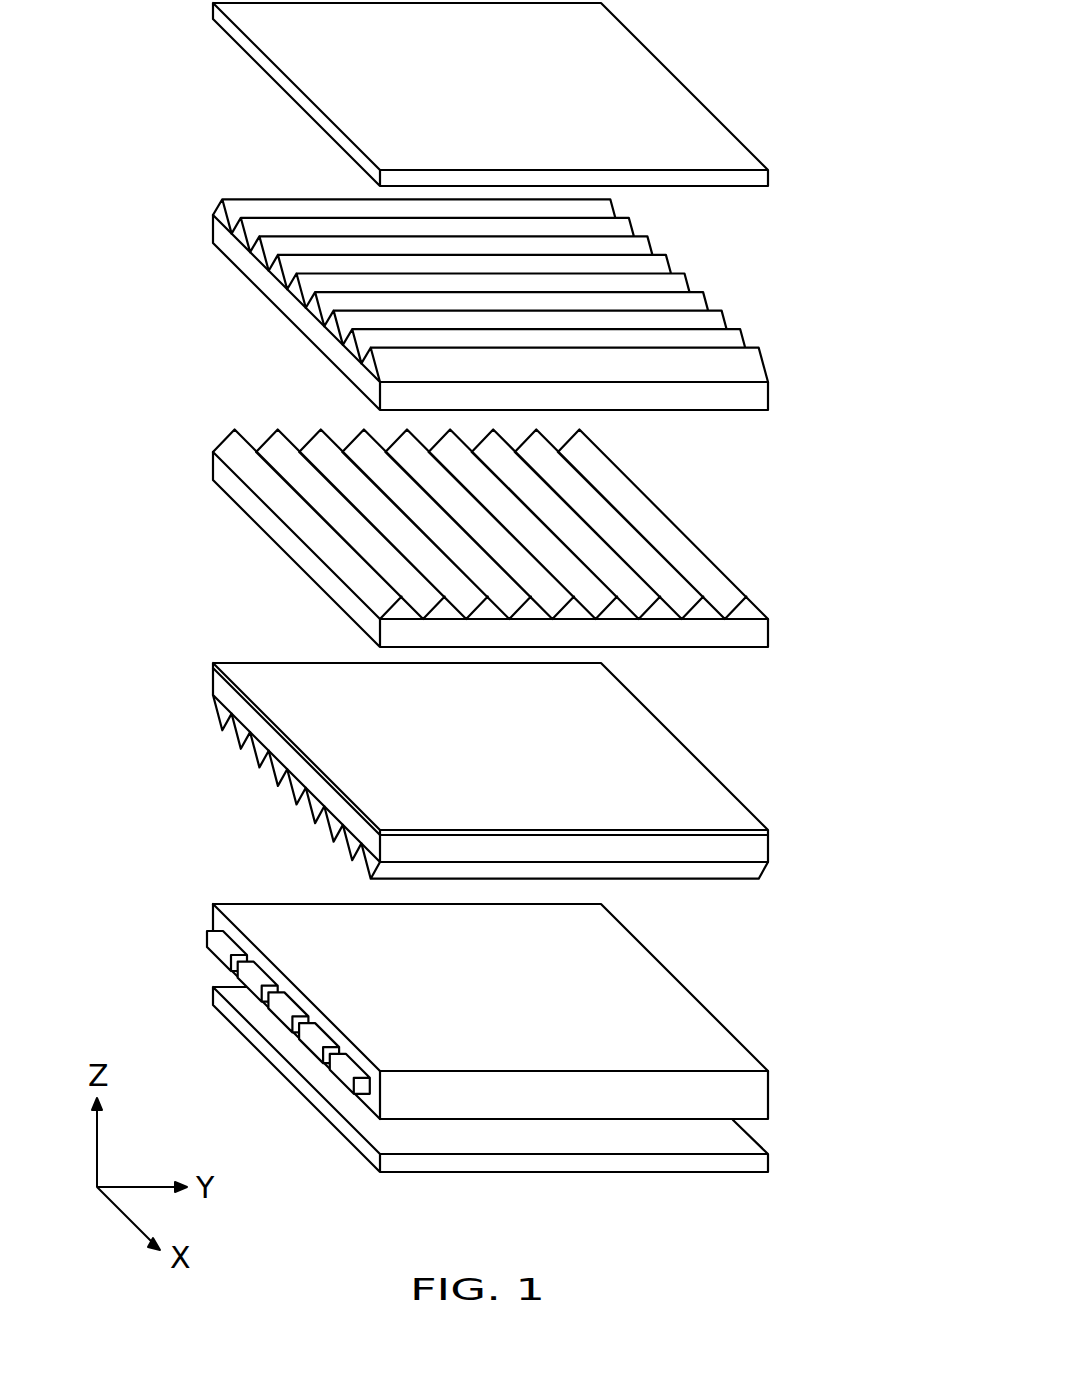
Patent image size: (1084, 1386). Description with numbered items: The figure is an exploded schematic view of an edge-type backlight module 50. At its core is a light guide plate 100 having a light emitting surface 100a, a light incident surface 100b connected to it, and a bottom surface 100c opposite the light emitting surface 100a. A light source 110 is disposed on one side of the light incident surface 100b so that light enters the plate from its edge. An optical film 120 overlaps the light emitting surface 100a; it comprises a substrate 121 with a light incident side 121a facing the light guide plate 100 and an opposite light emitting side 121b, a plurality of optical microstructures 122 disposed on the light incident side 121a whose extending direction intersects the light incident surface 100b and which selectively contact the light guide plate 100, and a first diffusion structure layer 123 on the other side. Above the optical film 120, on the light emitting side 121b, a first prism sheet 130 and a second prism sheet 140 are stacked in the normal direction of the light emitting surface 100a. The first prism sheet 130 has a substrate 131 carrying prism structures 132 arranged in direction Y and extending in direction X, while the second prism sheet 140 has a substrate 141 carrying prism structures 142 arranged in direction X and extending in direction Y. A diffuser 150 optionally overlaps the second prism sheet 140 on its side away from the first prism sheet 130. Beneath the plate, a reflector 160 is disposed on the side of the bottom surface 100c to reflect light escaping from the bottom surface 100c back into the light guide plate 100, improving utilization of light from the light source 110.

The backlight module 50 is at (509, 620).
The light guide plate 100 is at (476, 1024).
The light emitting surface 100a is at (300, 912).
The light incident surface 100b is at (199, 929).
The bottom surface 100c is at (444, 1136).
The light source 110 is at (282, 1015).
The optical film 120 is at (560, 806).
The substrate 121 is at (533, 808).
The light incident side 121a is at (712, 874).
The light emitting side 121b is at (706, 822).
The optical microstructures 122 is at (750, 873).
The first diffusion structure layer 123 is at (753, 832).
The first prism sheet 130 is at (560, 541).
The substrate 131 is at (745, 632).
The prism structures 132 is at (750, 610).
The second prism sheet 140 is at (560, 308).
The substrate 141 is at (745, 398).
The prism structures 142 is at (742, 372).
The diffuser 150 is at (730, 152).
The reflector 160 is at (748, 1162).